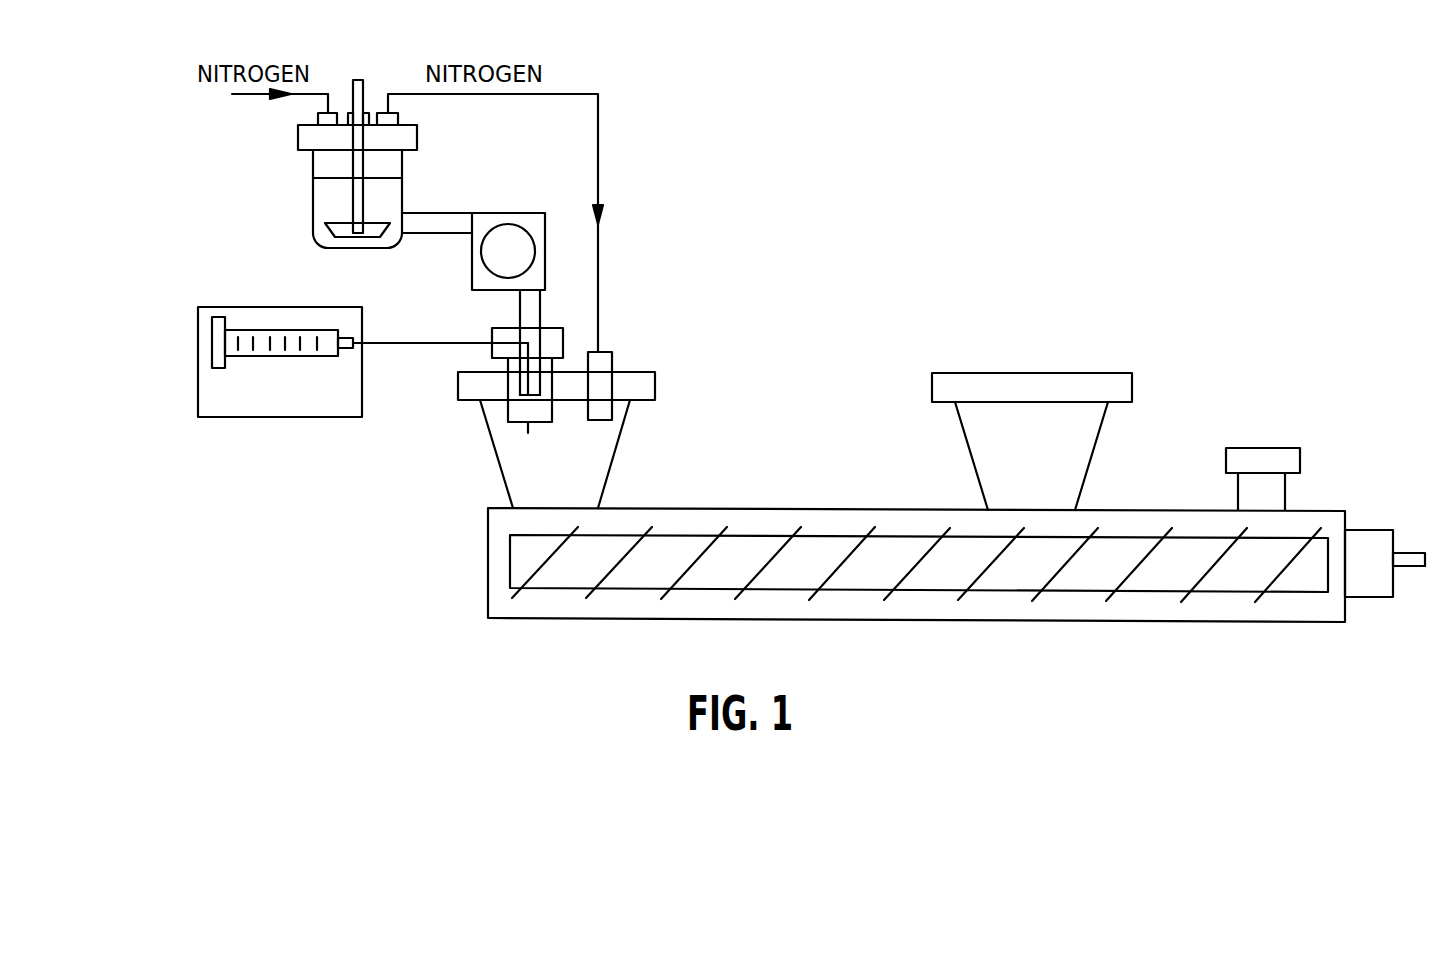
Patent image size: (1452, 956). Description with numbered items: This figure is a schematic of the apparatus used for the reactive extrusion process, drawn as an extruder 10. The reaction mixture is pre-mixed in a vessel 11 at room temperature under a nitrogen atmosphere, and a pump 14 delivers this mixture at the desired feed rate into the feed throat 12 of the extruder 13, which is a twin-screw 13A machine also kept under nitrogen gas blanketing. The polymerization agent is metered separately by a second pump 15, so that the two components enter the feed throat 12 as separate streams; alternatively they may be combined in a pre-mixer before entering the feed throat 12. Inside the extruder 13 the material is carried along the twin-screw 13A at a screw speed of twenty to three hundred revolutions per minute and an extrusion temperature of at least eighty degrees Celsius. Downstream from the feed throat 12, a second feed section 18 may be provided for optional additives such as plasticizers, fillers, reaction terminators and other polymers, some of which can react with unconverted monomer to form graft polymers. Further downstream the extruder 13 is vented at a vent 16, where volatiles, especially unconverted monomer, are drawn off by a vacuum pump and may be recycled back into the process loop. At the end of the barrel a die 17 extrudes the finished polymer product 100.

The extruder 10 is at (675, 608).
The vessel 11 is at (313, 250).
The feed throat 12 is at (583, 462).
The extruder 13 is at (873, 570).
The twin-screw 13A is at (1068, 570).
The pump 14 is at (472, 272).
The pump 15 is at (223, 307).
The vent 16 is at (1278, 452).
The die 17 is at (1378, 540).
The second feed section 18 is at (1047, 452).
The polymer product 100 is at (1412, 571).